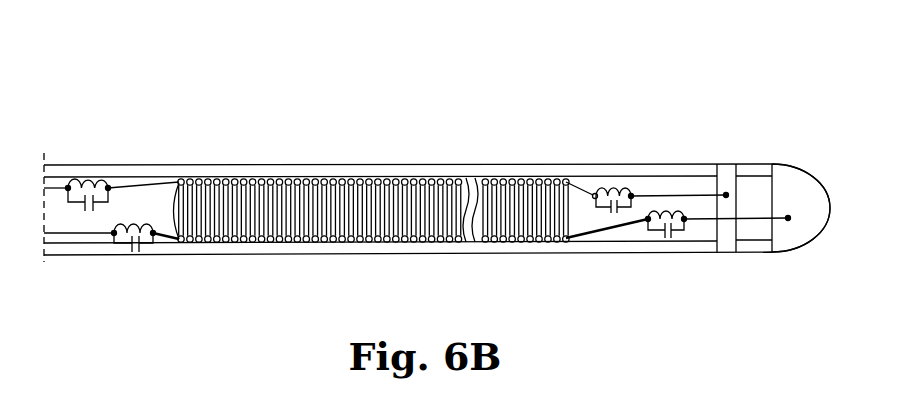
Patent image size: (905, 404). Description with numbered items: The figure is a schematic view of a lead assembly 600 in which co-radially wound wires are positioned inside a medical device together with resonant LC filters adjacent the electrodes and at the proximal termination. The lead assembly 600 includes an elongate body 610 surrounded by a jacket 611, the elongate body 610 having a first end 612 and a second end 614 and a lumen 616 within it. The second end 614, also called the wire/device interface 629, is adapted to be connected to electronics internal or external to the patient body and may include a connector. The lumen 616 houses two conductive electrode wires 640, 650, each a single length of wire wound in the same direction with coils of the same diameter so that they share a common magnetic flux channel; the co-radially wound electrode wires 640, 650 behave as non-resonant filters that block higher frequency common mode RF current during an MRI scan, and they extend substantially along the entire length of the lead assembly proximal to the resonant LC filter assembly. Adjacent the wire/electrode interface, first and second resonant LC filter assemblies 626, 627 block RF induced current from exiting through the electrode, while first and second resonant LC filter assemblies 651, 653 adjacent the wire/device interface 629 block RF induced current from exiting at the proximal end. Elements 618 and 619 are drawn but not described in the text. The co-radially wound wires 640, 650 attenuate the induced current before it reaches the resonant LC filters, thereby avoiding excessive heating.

The lead assembly 600 is at (651, 88).
The elongate body 610 is at (392, 165).
The jacket 611 is at (323, 172).
The first end 612 is at (828, 190).
The second end 614 is at (163, 192).
The lumen 616 is at (588, 195).
The end cap 618 is at (797, 182).
The connector block 619 is at (725, 170).
The first resonant LC filter assembly 626 is at (620, 182).
The second resonant LC filter assembly 627 is at (682, 232).
The wire/device interface 629 is at (45, 263).
The electrode wire 640 is at (226, 178).
The electrode wire 650 is at (280, 178).
The first resonant LC filter assembly 651 is at (143, 246).
The second resonant LC filter assembly 653 is at (92, 174).